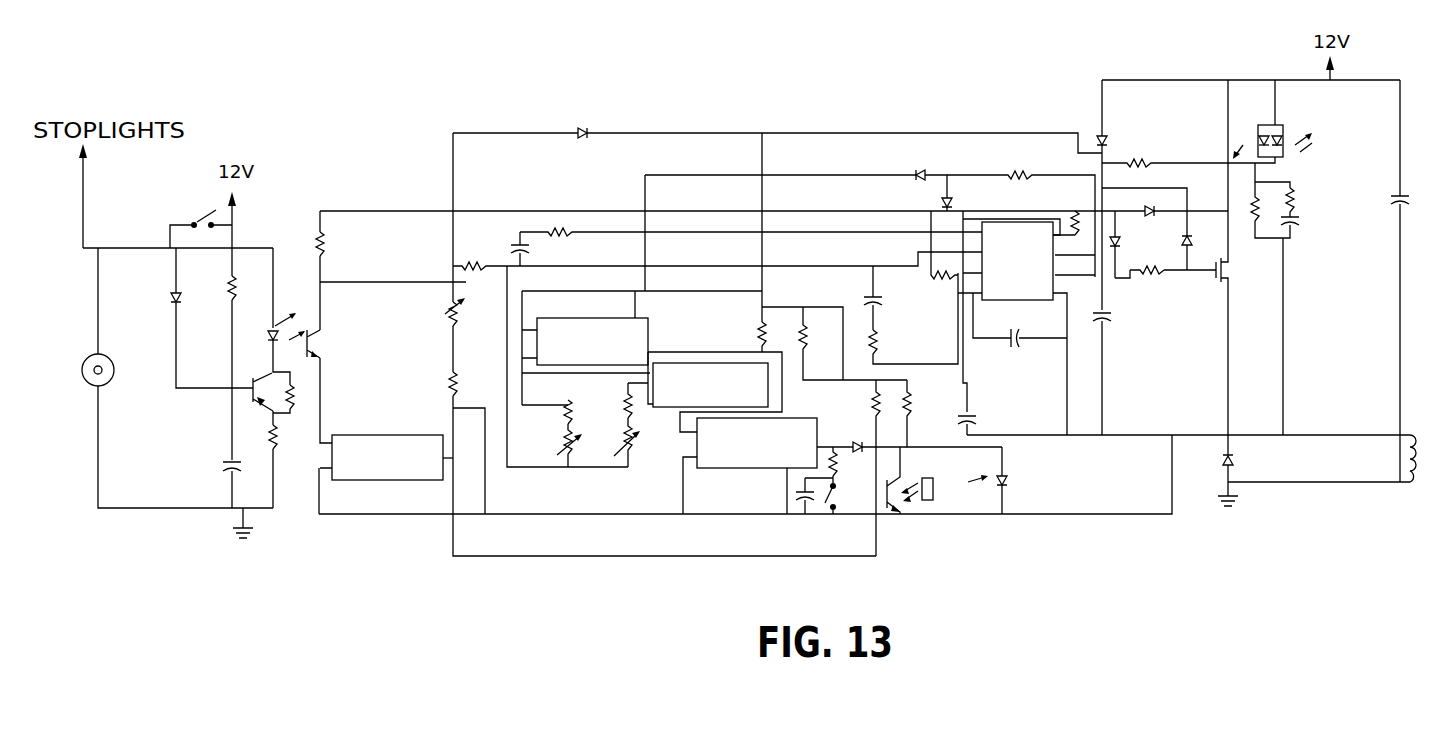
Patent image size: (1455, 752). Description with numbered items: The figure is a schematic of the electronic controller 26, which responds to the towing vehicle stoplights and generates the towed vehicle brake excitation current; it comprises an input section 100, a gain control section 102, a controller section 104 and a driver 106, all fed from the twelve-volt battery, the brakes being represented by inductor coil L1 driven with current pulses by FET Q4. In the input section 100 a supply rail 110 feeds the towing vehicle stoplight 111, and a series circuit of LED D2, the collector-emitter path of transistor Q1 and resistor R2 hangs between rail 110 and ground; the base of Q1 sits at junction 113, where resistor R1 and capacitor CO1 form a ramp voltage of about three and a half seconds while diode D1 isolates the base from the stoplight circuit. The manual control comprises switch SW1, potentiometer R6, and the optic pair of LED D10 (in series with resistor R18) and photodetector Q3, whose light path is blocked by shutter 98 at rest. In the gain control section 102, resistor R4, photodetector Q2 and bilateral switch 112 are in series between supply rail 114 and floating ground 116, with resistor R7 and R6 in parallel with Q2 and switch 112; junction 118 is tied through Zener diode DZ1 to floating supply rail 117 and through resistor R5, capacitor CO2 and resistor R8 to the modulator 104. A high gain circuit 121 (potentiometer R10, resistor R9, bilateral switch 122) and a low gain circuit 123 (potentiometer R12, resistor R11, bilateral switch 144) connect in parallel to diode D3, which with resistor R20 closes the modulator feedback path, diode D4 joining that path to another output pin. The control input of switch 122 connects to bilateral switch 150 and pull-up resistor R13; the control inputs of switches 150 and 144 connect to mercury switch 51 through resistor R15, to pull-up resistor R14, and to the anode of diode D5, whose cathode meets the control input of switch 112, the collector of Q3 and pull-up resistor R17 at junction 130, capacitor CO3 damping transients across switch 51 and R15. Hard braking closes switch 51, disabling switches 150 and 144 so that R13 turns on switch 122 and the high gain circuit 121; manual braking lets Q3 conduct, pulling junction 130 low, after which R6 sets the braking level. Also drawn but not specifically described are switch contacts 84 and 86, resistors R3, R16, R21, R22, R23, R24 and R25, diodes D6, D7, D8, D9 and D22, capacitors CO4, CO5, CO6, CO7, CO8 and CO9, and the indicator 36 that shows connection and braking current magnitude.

The electronic controller 26 is at (893, 92).
The indicator 36 is at (1264, 118).
The mercury switch 51 is at (843, 498).
The switch contact 84 is at (848, 476).
The switch 86 is at (831, 512).
The shutter 98 is at (935, 483).
The input section 100 is at (308, 204).
The gain control section 102 is at (641, 144).
The controller section 104 is at (991, 133).
The driver 106 is at (1201, 100).
The supply rail 110 is at (257, 247).
The towing vehicle stoplight 111 is at (106, 381).
The bilateral switch 112 is at (402, 481).
The junction 113 is at (225, 402).
The supply rail 114 is at (564, 211).
The floating ground 116 is at (1040, 516).
The floating supply rail 117 is at (862, 133).
The junction 118 is at (407, 285).
The high gain circuit 121 is at (556, 422).
The bilateral switch 122 is at (608, 318).
The low gain circuit 123 is at (647, 447).
The junction 130 is at (880, 449).
The bilateral switch 144 is at (741, 362).
The bilateral switch 150 is at (762, 470).
The manually actuated switch SW1 is at (210, 220).
The diode D1 is at (170, 301).
The light emitting diode D2 is at (288, 311).
The diode D3 is at (916, 172).
The diode D4 is at (940, 204).
The diode D5 is at (868, 444).
The diode D6 is at (1098, 139).
The diode D7 is at (1130, 244).
The diode D8 is at (1148, 215).
The diode D9 is at (1235, 462).
The light emitting diode D10 is at (1006, 484).
The zener diode D22 is at (1193, 250).
The Zener diode DZ1 is at (582, 129).
The transistor Q1 is at (263, 375).
The photodetector Q2 is at (315, 352).
The light responsive transistor Q3 is at (896, 510).
The FET element Q4 is at (1226, 276).
The resistor R1 is at (246, 296).
The resistor R2 is at (278, 441).
The resistor R3 is at (298, 395).
The resistor R4 is at (322, 247).
The resistor R5 is at (471, 264).
The potentiometer R6 is at (465, 323).
The resistor R7 is at (457, 388).
The resistor R8 is at (572, 233).
The resistor R9 is at (586, 408).
The potentiometer R10 is at (587, 445).
The resistor R11 is at (645, 406).
The potentiometer R12 is at (634, 458).
The pull-up resistor R13 is at (752, 328).
The pull-up resistor R14 is at (803, 340).
The resistor R15 is at (849, 452).
The resistor R16 is at (878, 342).
The pull-up resistor R17 is at (856, 413).
The resistor R18 is at (952, 413).
The resistor R20 is at (1016, 172).
The resistor R21 is at (1074, 212).
The resistor R22 is at (1140, 163).
The resistor R23 is at (1152, 273).
The resistor R24 is at (1252, 220).
The resistor R25 is at (1293, 200).
The capacitor CO1 is at (222, 467).
The capacitor CO2 is at (525, 249).
The capacitor CO3 is at (803, 510).
The capacitor CO4 is at (878, 297).
The capacitor CO5 is at (974, 414).
The capacitor CO6 is at (1020, 348).
The capacitor CO7 is at (1107, 323).
The capacitor CO8 is at (1297, 226).
The capacitor CO9 is at (1396, 201).
The inductor coil L1 is at (1322, 474).